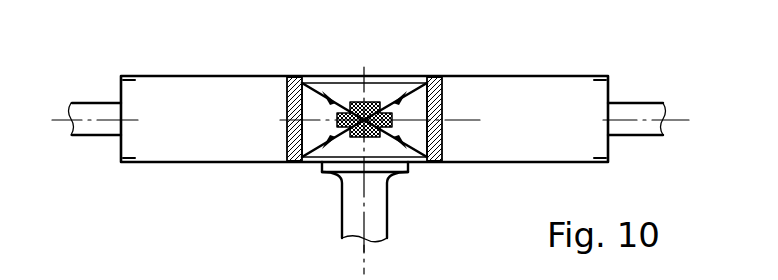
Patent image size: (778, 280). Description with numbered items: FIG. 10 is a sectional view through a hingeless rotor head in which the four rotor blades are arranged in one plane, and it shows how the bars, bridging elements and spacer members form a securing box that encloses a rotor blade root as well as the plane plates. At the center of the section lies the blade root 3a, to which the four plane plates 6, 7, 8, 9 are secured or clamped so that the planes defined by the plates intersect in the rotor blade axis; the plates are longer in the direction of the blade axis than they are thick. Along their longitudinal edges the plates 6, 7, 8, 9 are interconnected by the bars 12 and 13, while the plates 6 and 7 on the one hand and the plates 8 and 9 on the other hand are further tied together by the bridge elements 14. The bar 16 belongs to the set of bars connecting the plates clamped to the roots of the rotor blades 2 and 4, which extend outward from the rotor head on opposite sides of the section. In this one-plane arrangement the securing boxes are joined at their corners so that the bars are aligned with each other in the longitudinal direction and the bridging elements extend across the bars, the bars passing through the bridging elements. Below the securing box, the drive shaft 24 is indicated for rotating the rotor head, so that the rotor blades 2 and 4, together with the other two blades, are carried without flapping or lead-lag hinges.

The rotor blade 2 is at (635, 115).
The blade root 3a is at (368, 104).
The rotor blade 4 is at (94, 122).
The plane plate 6 is at (400, 98).
The plane plate 7 is at (330, 98).
The plane plate 8 is at (403, 142).
The plane plate 9 is at (327, 140).
The bar 12 is at (288, 105).
The bar 13 is at (442, 108).
The bridge element 14 is at (318, 82).
The bar 16 is at (518, 100).
The drive shaft 24 is at (355, 202).